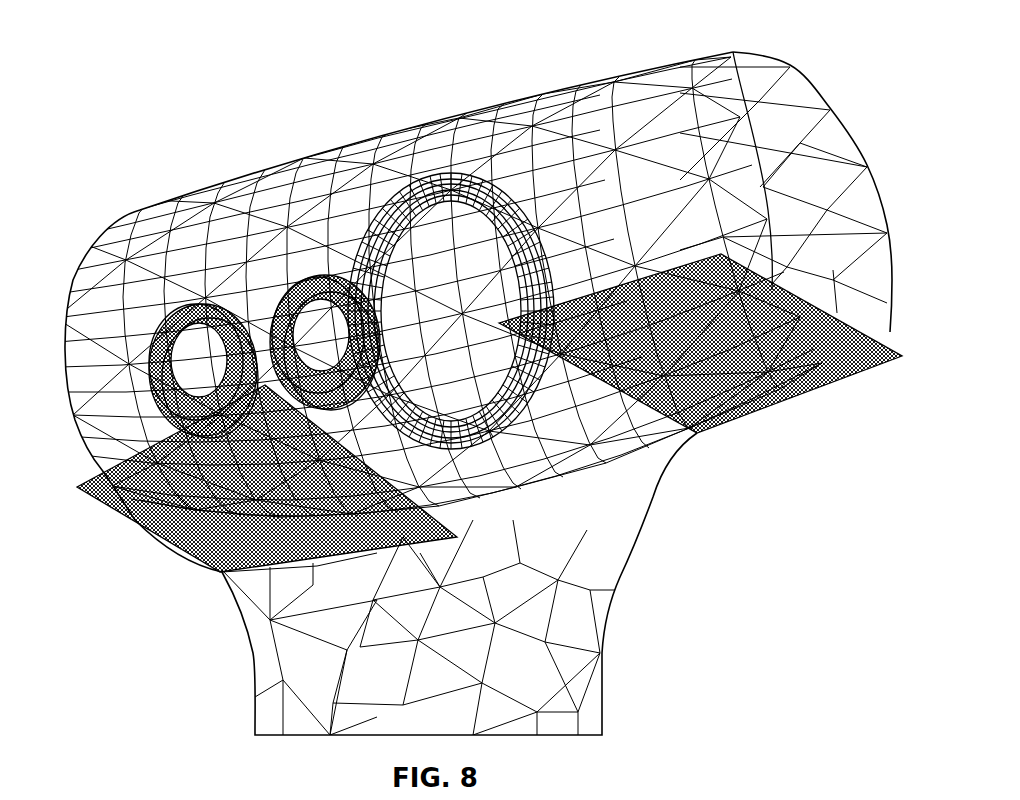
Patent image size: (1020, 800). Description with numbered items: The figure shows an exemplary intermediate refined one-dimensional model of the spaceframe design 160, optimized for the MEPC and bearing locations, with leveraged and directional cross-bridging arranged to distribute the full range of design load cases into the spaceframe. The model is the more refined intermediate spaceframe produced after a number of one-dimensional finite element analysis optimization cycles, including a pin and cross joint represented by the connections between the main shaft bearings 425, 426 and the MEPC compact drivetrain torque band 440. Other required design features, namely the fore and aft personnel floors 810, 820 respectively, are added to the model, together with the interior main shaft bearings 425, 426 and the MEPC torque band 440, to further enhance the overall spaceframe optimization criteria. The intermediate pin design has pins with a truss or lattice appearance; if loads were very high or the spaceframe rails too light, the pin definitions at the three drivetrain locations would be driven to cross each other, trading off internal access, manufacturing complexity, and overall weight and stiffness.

The meshed housing body 160 is at (582, 86).
The MEPC compact drivetrain torque band 440 is at (410, 175).
The main shaft bearings 425 is at (188, 307).
The second boss ring 426 is at (300, 280).
The fore personnel floor 810 is at (98, 500).
The aft personnel floor 820 is at (880, 366).